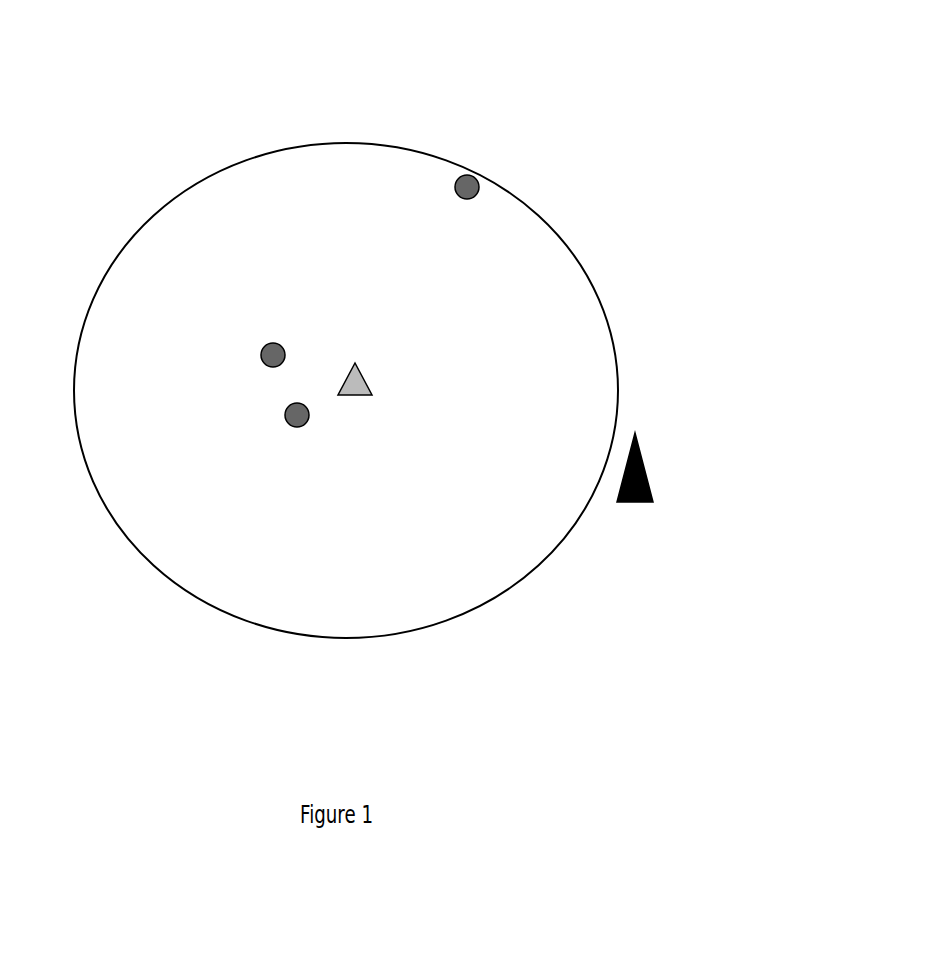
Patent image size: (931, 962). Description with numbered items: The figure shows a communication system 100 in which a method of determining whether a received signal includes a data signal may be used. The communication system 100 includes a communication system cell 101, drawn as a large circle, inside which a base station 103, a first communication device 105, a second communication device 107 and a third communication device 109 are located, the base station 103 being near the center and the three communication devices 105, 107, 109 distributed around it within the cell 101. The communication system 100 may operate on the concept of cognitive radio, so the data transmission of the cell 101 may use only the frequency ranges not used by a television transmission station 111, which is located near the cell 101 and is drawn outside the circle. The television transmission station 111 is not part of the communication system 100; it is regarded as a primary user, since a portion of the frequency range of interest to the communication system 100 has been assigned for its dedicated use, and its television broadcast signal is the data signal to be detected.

The communication system 100 is at (688, 87).
The communication system cell 101 is at (322, 142).
The base station 103 is at (372, 380).
The first communication device 105 is at (297, 433).
The second communication device 107 is at (268, 343).
The third communication device 109 is at (468, 173).
The TV transmission station 111 is at (652, 448).